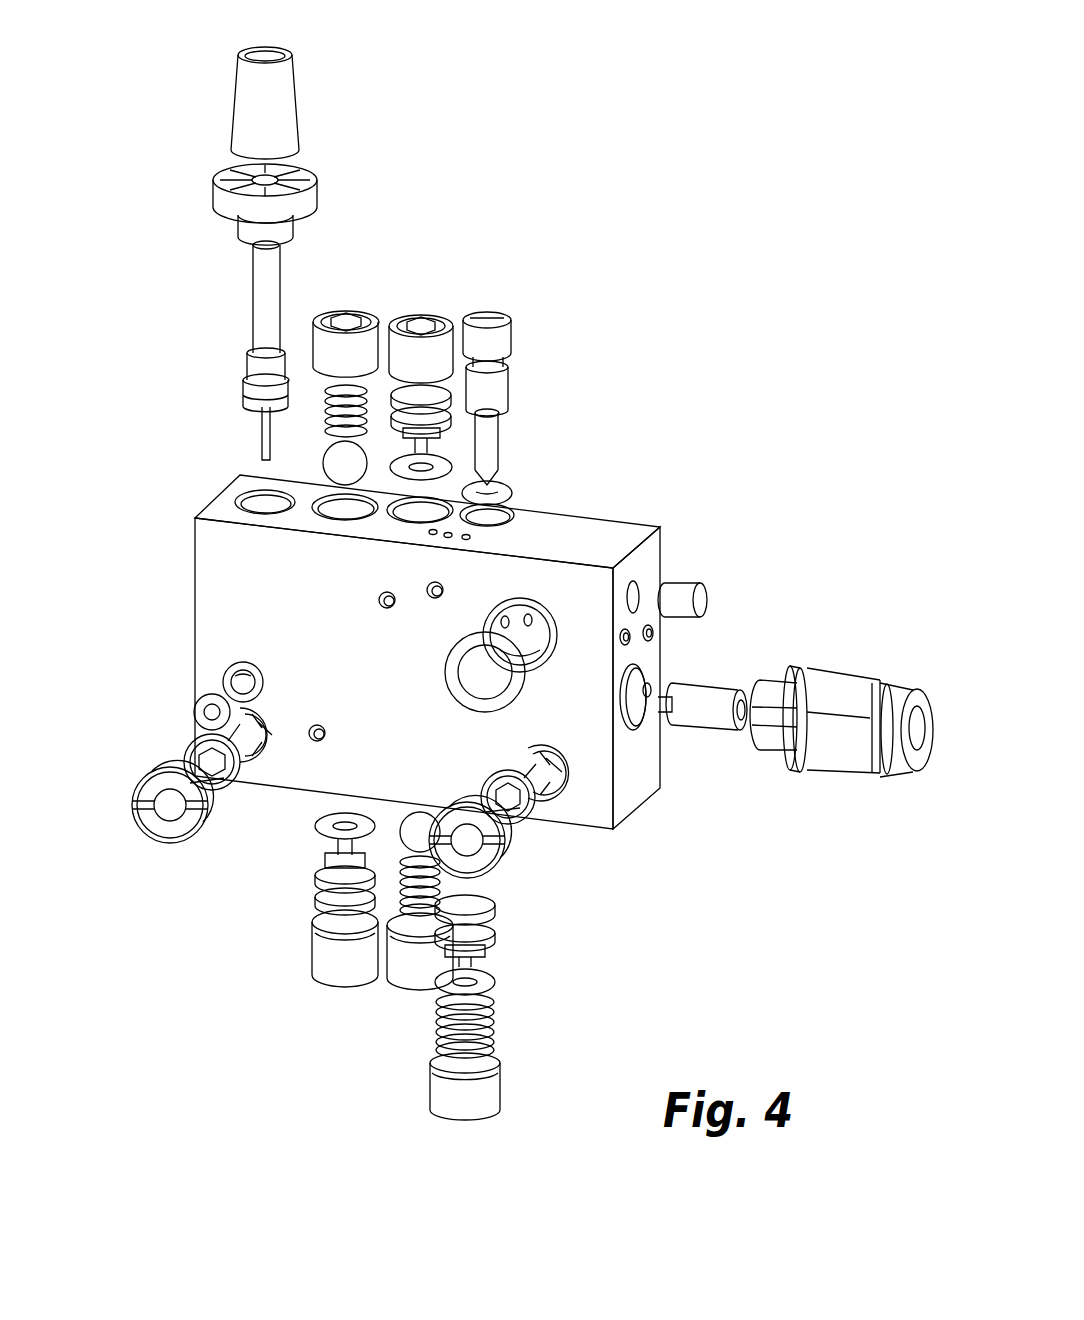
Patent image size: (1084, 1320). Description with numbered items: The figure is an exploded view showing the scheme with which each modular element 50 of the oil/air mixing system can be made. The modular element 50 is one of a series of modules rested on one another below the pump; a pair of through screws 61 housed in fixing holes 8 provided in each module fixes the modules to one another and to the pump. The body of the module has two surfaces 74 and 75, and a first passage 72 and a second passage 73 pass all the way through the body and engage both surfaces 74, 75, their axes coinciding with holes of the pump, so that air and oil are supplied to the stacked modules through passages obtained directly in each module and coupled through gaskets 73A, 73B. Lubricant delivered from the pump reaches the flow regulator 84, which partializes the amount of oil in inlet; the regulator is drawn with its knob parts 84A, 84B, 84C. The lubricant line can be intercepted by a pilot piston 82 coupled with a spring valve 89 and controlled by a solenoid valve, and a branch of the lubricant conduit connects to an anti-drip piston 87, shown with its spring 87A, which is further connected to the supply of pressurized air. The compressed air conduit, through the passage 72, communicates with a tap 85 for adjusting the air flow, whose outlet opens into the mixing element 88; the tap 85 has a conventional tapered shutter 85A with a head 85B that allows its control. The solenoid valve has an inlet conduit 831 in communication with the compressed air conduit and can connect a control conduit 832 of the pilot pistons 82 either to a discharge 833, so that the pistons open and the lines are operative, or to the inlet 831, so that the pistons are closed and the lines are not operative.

The modular element 50 is at (454, 539).
The surface of the modular element 74 is at (212, 552).
The surface of the modular element 75 is at (683, 553).
The flow regulator 84 is at (265, 245).
The knob stem 84A is at (262, 323).
The knob base 84B is at (308, 195).
The knob cap 84C is at (283, 90).
The spring valve 89 is at (341, 297).
The pilot piston 82 is at (427, 297).
The tap 85 is at (552, 360).
The tapered shutter 85A is at (512, 435).
The head 85B is at (508, 322).
The mixing element 88 is at (842, 692).
The inlet conduit 831 is at (418, 526).
The control conduit 832 is at (445, 540).
The discharge 833 is at (468, 542).
The first passage 72 is at (533, 642).
The second passage 73 is at (238, 675).
The gasket 73A is at (200, 712).
The gasket 73B is at (470, 692).
The through screws 61 is at (187, 757).
The fixing holes 8 is at (268, 783).
The anti-drip piston 87 is at (519, 1053).
The spring 87A is at (492, 1028).